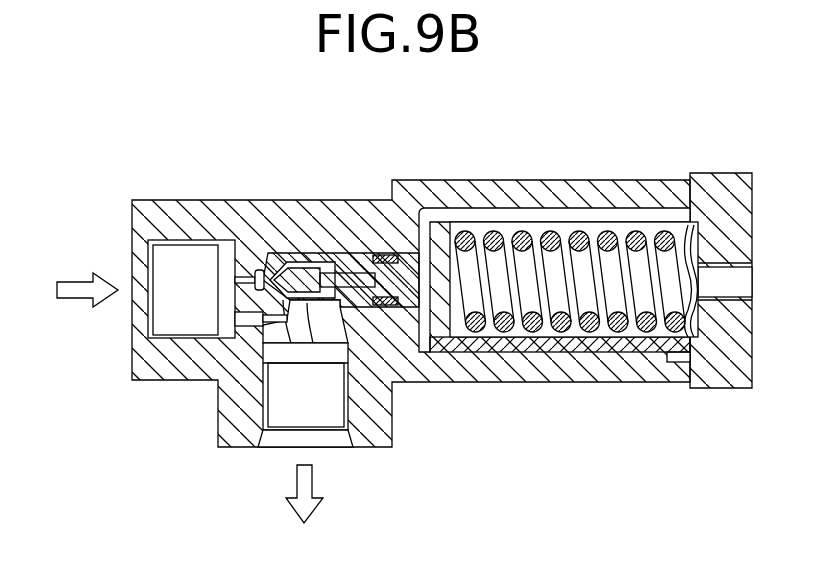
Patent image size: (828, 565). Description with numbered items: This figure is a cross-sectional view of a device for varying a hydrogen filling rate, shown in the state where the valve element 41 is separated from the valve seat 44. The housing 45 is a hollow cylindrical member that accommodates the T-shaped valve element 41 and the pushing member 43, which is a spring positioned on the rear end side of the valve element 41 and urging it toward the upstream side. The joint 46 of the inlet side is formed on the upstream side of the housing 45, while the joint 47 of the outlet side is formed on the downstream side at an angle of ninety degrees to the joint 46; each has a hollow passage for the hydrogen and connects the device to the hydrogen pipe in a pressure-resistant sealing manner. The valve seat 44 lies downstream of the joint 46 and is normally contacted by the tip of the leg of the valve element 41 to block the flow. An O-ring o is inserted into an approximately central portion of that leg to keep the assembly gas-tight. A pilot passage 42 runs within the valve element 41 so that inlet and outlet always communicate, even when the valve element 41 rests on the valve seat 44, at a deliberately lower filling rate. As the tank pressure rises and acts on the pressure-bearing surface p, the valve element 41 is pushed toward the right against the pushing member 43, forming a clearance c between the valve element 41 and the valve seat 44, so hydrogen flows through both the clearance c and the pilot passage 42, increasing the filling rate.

The joint of inlet side 46 is at (155, 205).
The valve seat 44 is at (252, 272).
The valve element 41 is at (292, 254).
The O-ring o is at (390, 254).
The clearance c is at (421, 207).
The pushing member 43 is at (522, 232).
The housing 45 is at (617, 200).
The pilot passage 42 is at (255, 326).
The joint of outlet side 47 is at (218, 424).
The pressure-bearing surface p is at (365, 338).